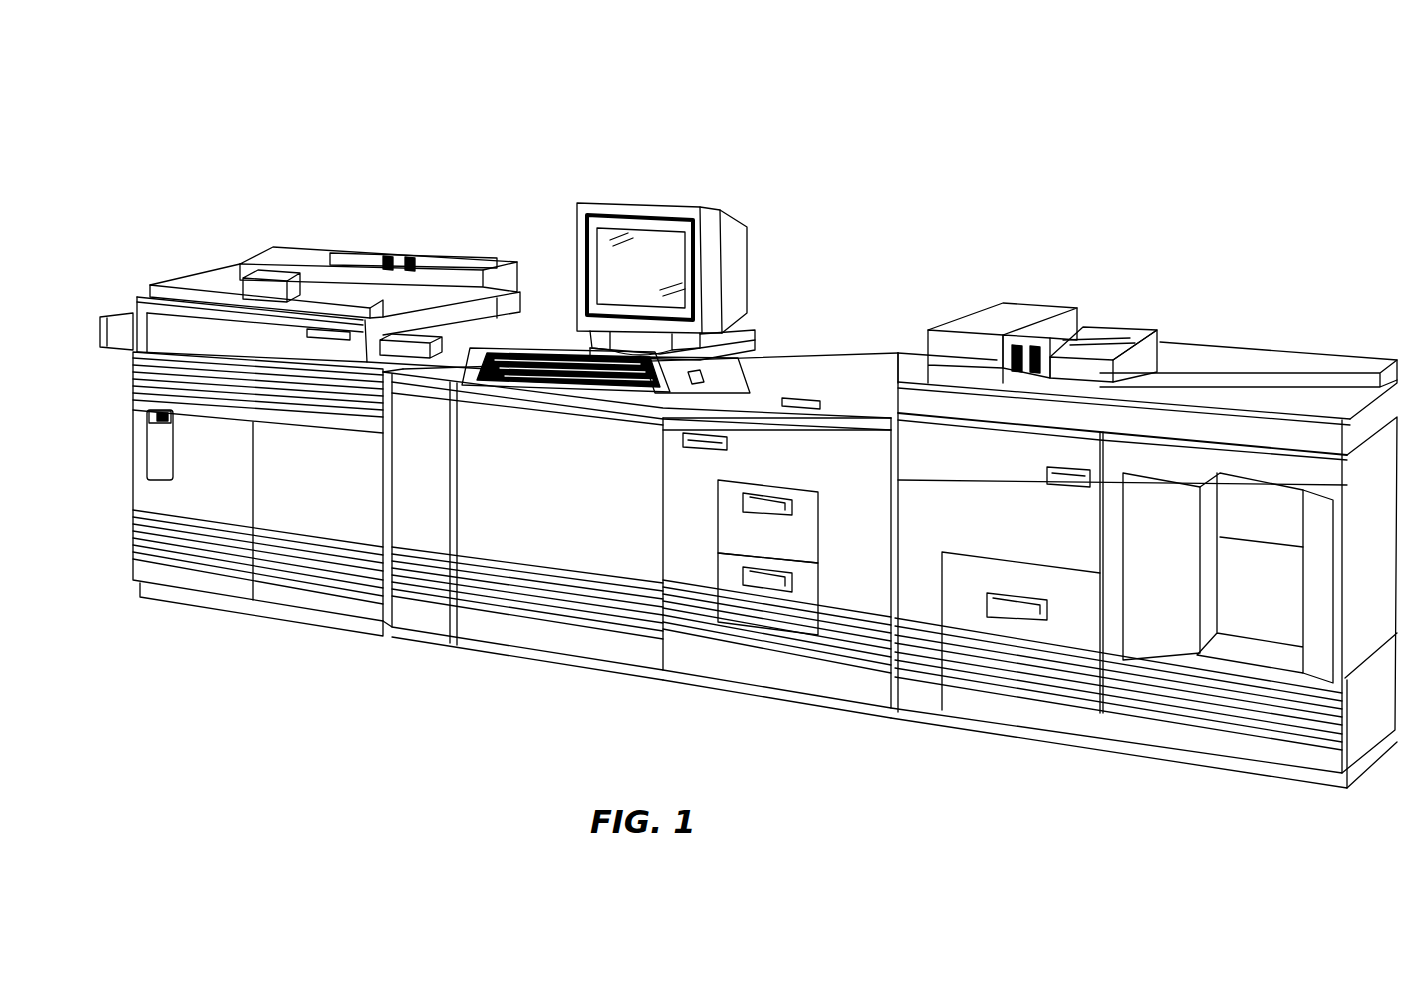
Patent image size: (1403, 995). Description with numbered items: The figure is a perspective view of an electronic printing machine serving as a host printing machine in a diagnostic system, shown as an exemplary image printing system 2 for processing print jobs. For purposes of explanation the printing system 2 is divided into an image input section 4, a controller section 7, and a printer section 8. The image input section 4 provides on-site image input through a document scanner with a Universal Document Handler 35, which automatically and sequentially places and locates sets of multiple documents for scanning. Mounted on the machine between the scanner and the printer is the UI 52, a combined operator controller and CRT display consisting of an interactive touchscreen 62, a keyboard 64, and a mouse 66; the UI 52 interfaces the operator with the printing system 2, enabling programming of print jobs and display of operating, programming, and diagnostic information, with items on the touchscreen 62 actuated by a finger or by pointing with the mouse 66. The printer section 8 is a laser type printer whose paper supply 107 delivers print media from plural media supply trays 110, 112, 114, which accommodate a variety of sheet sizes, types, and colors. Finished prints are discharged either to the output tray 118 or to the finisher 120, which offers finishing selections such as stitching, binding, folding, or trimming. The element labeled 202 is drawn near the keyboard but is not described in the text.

The image printing system 2 is at (886, 92).
The image input section 4 is at (374, 225).
The controller section 7 is at (124, 492).
The printer section 8 is at (858, 272).
The Universal Document Handler 35 is at (247, 272).
The UI 52 is at (669, 197).
The interactive touchscreen 62 is at (603, 273).
The keyboard 64 is at (555, 400).
The mouse 66 is at (653, 405).
The paper supply 107 is at (828, 565).
The media supply tray 110 is at (972, 553).
The media supply tray 112 is at (785, 487).
The media supply tray 114 is at (718, 575).
The output tray 118 is at (1098, 318).
The finisher 120 is at (1193, 737).
The keyboard tray 202 is at (505, 398).